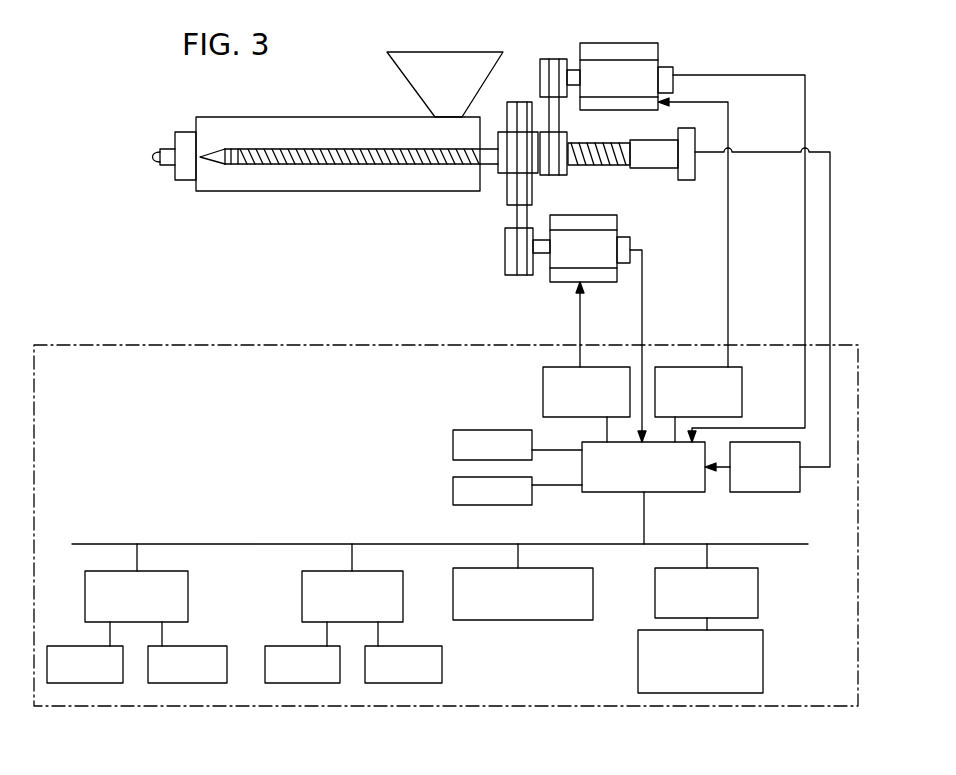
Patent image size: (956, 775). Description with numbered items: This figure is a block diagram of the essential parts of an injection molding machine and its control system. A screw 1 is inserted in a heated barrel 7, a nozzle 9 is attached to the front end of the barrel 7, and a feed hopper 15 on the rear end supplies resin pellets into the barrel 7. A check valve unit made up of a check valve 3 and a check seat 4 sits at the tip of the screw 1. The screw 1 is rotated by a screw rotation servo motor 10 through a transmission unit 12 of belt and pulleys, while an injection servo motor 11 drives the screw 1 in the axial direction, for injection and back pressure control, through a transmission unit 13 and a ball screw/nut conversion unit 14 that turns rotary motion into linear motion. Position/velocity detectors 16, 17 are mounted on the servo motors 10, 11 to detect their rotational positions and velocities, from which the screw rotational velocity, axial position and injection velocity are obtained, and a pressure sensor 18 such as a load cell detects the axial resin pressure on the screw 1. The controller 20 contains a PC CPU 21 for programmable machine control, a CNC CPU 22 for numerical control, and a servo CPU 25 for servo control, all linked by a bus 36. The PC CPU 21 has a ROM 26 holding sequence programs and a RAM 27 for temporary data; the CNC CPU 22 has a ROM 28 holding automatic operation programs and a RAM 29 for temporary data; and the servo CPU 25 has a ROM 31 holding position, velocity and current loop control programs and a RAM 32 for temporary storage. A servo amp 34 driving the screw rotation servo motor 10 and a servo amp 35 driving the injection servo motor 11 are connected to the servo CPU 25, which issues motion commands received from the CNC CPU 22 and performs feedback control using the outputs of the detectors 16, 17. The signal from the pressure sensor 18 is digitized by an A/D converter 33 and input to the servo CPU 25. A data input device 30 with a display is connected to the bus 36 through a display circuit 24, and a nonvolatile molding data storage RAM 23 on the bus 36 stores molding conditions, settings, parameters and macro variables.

The screw 1 is at (320, 163).
The check valve 3 is at (224, 165).
The check seat 4 is at (235, 165).
The heated barrel 7 is at (263, 118).
The nozzle 9 is at (170, 149).
The screw rotation servo motor 10 is at (607, 218).
The injection servo motor 11 is at (598, 47).
The transmission unit 12 is at (496, 222).
The transmission unit 13 is at (526, 68).
The conversion unit 14 is at (584, 130).
The feed hopper 15 is at (440, 56).
The position/velocity detector 16 is at (630, 240).
The position/velocity detector 17 is at (674, 66).
The pressure sensor 18 is at (695, 172).
The controller 20 is at (556, 707).
The PC CPU 21 is at (108, 571).
The CNC CPU 22 is at (303, 571).
The molding data storage RAM 23 is at (478, 568).
The display circuit 24 is at (759, 590).
The servo CPU 25 is at (623, 492).
The ROM 26 is at (63, 684).
The RAM 27 is at (157, 684).
The ROM 28 is at (272, 684).
The RAM 29 is at (377, 684).
The data input device 30 is at (764, 660).
The ROM 31 is at (453, 450).
The RAM 32 is at (453, 491).
The A/D converter 33 is at (742, 492).
The servo amp 34 is at (543, 385).
The servo amp 35 is at (743, 392).
The bus 36 is at (212, 544).